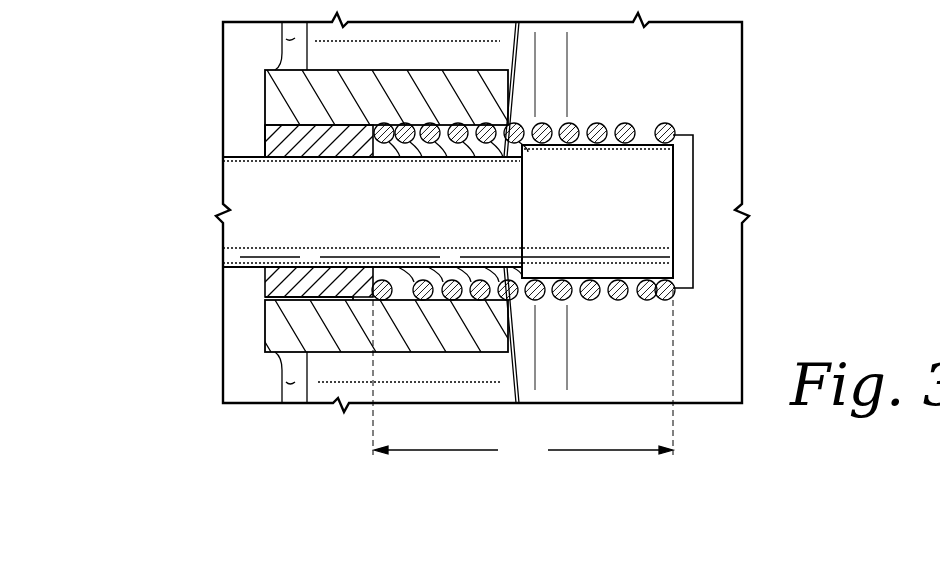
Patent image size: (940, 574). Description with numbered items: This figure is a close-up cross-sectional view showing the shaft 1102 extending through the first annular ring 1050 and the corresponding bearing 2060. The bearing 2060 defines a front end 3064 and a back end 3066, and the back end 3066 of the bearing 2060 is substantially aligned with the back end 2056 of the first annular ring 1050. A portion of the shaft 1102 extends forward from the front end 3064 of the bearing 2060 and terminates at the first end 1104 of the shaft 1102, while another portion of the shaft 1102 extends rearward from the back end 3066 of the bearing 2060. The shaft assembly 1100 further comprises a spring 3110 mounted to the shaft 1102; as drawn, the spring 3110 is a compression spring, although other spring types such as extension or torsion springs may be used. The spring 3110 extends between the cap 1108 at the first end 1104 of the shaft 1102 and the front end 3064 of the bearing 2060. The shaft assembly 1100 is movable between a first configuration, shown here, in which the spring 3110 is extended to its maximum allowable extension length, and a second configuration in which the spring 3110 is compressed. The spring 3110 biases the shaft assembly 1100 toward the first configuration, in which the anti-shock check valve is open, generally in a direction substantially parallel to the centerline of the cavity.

The first annular ring 1050 is at (347, 330).
The shaft assembly 1100 is at (603, 312).
The shaft 1102 is at (312, 198).
The first end 1104 is at (632, 190).
The cap 1108 is at (684, 224).
The back end 2056 is at (263, 325).
The bearing 2060 is at (328, 142).
The front end 3064 is at (377, 140).
The back end 3066 is at (263, 138).
The spring 3110 is at (627, 124).